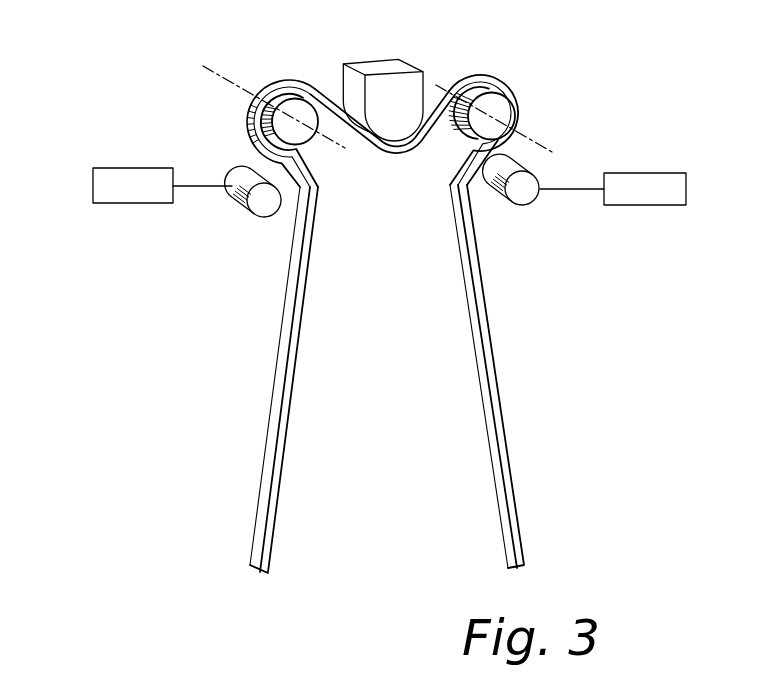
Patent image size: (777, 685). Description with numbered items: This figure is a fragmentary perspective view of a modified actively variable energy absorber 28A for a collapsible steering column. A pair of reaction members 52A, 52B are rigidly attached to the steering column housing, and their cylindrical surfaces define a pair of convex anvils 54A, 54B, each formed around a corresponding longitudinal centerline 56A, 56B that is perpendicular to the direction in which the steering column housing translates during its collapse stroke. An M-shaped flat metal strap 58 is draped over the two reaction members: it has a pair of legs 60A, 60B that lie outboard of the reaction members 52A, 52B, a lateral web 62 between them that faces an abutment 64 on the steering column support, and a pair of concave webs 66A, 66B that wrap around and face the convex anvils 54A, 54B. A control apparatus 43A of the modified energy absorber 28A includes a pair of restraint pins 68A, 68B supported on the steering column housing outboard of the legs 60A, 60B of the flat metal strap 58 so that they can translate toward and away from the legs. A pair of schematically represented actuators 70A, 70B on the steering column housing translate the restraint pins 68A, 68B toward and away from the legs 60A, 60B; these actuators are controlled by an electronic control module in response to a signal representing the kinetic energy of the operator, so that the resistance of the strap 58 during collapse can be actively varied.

The modified actively variable energy absorber 28A is at (250, 314).
The M-shaped flat metal strap 58 is at (491, 302).
The leg 60A is at (268, 438).
The leg 60B is at (505, 435).
The lateral web 62 is at (376, 147).
The abutment 64 is at (389, 93).
The reaction member 52A is at (305, 145).
The reaction member 52B is at (452, 127).
The convex anvil 54A is at (287, 90).
The convex anvil 54B is at (480, 88).
The longitudinal centerline 56A is at (260, 88).
The longitudinal centerline 56B is at (437, 84).
The concave web 66A is at (247, 116).
The concave web 66B is at (520, 102).
The restraint pin 68A is at (233, 198).
The restraint pin 68B is at (496, 198).
The actuator 70A is at (110, 193).
The actuator 70B is at (665, 197).
The control apparatus 43A is at (124, 151).